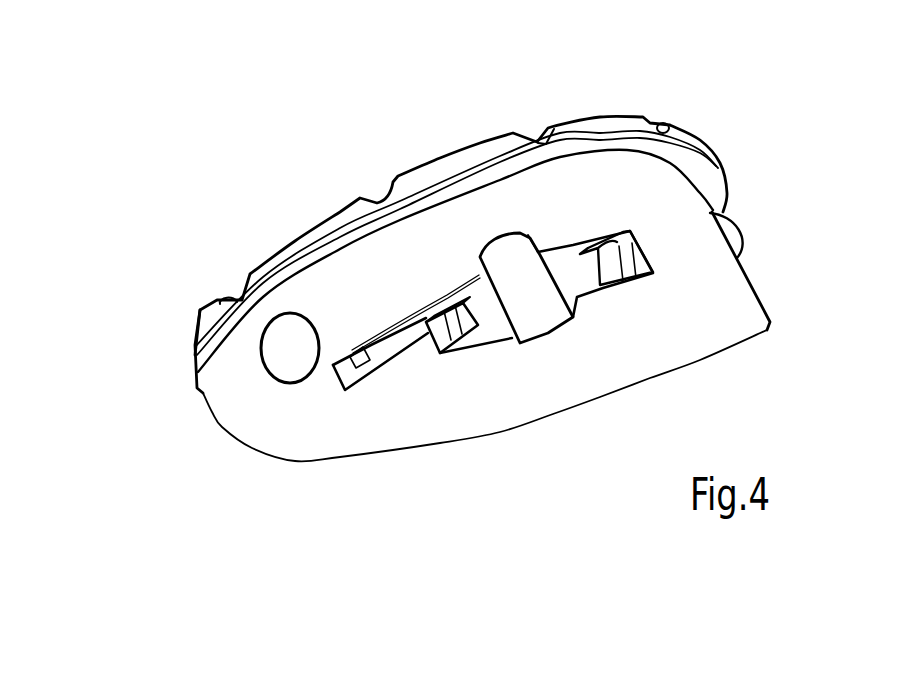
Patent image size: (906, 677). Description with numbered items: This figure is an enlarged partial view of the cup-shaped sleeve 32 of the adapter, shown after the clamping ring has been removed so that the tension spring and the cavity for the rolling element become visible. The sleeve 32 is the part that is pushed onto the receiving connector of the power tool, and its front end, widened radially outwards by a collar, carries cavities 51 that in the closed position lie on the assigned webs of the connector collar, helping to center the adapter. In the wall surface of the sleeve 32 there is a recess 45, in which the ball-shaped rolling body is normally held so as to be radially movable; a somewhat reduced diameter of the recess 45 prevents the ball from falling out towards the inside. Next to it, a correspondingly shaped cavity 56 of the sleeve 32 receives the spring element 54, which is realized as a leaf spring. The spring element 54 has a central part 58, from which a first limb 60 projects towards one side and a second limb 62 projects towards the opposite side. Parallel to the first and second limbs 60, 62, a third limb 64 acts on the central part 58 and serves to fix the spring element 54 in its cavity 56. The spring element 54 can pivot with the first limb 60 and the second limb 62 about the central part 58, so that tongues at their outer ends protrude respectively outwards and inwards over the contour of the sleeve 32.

The sleeve 32 is at (658, 192).
The recess 45 is at (290, 338).
The cavities 51 is at (533, 133).
The spring element 54 is at (448, 296).
The cavity 56 is at (500, 237).
The central part 58 is at (545, 310).
The first limb 60 is at (432, 350).
The second limb 62 is at (615, 265).
The third limb 64 is at (393, 335).